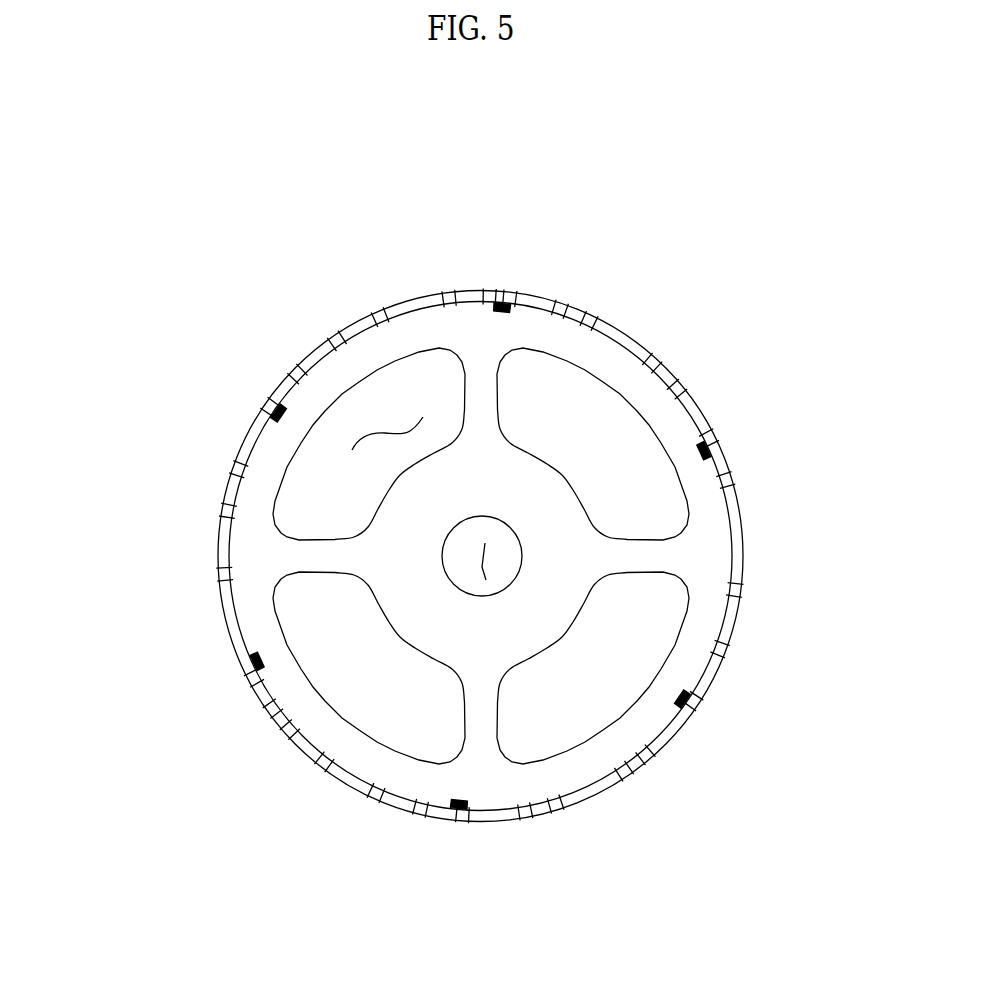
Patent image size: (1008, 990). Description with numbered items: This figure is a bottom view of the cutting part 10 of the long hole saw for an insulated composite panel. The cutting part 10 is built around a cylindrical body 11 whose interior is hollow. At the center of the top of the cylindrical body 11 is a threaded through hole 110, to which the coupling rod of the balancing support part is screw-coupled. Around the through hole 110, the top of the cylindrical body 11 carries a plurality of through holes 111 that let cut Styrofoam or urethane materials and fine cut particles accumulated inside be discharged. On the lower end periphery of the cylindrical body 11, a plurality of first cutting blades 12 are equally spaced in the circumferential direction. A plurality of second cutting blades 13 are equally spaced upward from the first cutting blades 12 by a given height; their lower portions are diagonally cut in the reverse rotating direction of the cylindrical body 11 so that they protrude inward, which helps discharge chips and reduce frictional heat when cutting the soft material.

The cutting part 10 is at (186, 287).
The cylindrical body 11 is at (562, 553).
The first cutting blades 12 is at (598, 318).
The second cutting blades 13 is at (508, 300).
The threaded through hole 110 is at (480, 567).
The through holes 111 is at (387, 432).